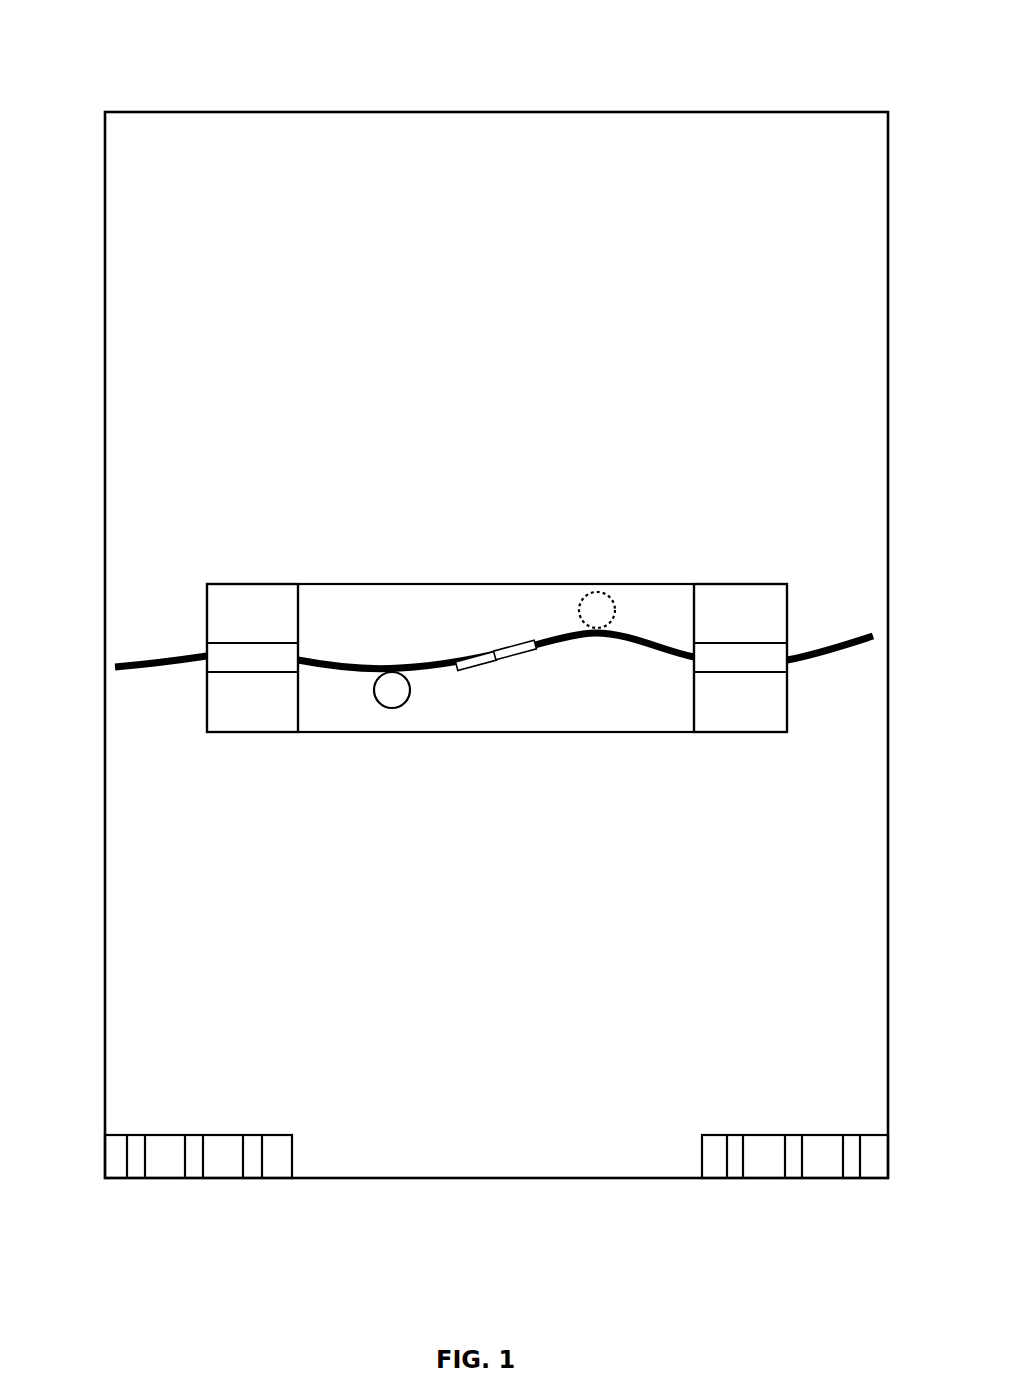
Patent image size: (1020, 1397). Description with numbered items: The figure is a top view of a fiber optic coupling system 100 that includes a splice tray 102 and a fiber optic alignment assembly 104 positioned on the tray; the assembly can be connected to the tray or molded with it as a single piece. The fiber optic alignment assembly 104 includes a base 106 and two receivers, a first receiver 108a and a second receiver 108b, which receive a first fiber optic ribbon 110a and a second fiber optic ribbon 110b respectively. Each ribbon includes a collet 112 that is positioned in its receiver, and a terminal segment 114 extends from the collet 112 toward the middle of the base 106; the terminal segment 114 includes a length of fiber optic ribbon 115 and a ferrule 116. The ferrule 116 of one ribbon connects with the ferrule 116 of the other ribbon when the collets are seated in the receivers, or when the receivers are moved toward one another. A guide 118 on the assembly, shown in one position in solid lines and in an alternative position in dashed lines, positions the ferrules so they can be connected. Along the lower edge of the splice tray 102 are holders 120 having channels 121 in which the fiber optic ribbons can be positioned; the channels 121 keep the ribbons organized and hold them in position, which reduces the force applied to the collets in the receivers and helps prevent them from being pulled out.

The fiber optic coupling system 100 is at (128, 38).
The splice tray 102 is at (471, 1178).
The fiber optic alignment assembly 104 is at (788, 704).
The base 106 is at (492, 710).
The first receiver 108a is at (250, 715).
The second receiver 108b is at (746, 715).
The first fiber optic ribbon 110a is at (148, 655).
The second fiber optic ribbon 110b is at (840, 640).
The collet 112 is at (252, 655).
The terminal segment 114 is at (382, 620).
The length of fiber optic ribbon 115 is at (342, 660).
The ferrule 116 is at (468, 650).
The guide 118 is at (392, 700).
The holder 120 is at (496, 1210).
The channel 121 is at (136, 1168).